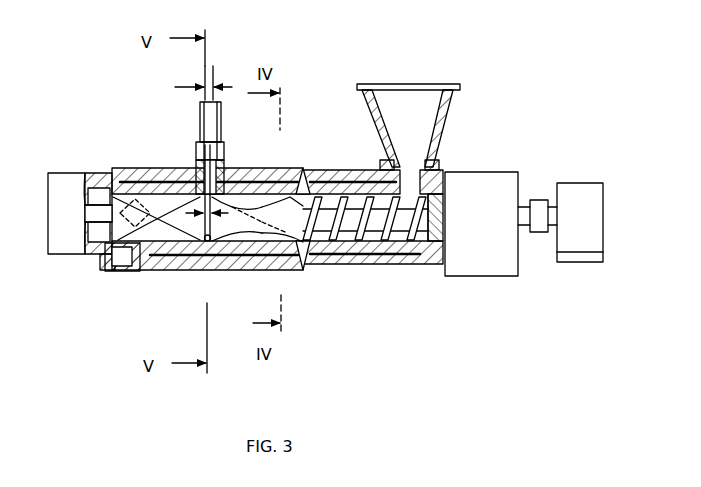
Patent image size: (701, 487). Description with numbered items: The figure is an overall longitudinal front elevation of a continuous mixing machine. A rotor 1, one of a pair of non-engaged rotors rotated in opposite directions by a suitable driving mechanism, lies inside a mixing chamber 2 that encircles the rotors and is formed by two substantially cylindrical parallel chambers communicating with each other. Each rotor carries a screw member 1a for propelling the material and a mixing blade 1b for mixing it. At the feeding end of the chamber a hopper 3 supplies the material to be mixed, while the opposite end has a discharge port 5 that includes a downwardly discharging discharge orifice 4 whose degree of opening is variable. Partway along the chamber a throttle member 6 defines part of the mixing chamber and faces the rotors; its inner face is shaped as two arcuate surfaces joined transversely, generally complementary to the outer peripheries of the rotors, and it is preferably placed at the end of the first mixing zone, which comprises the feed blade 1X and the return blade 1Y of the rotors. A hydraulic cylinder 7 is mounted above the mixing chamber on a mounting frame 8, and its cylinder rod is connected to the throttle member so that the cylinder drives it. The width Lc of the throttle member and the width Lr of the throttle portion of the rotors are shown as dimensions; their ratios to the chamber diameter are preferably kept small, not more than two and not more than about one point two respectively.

The rotor 1 is at (270, 219).
The screw feed section of rotor 1a is at (360, 238).
The mixing blade 1b is at (150, 266).
The feed blade 1X is at (288, 204).
The return blade 1Y is at (230, 195).
The mixing chamber 2 is at (118, 167).
The hopper 3 is at (403, 92).
The discharge orifice 4 is at (103, 266).
The discharge port 5 is at (118, 271).
The throttle member 6 is at (221, 142).
The hydraulic cylinder 7 is at (200, 118).
The mounting frame 8 is at (207, 243).
The width of the throttle member Lc is at (199, 81).
The width of throttle portion of rotors Lr is at (224, 243).